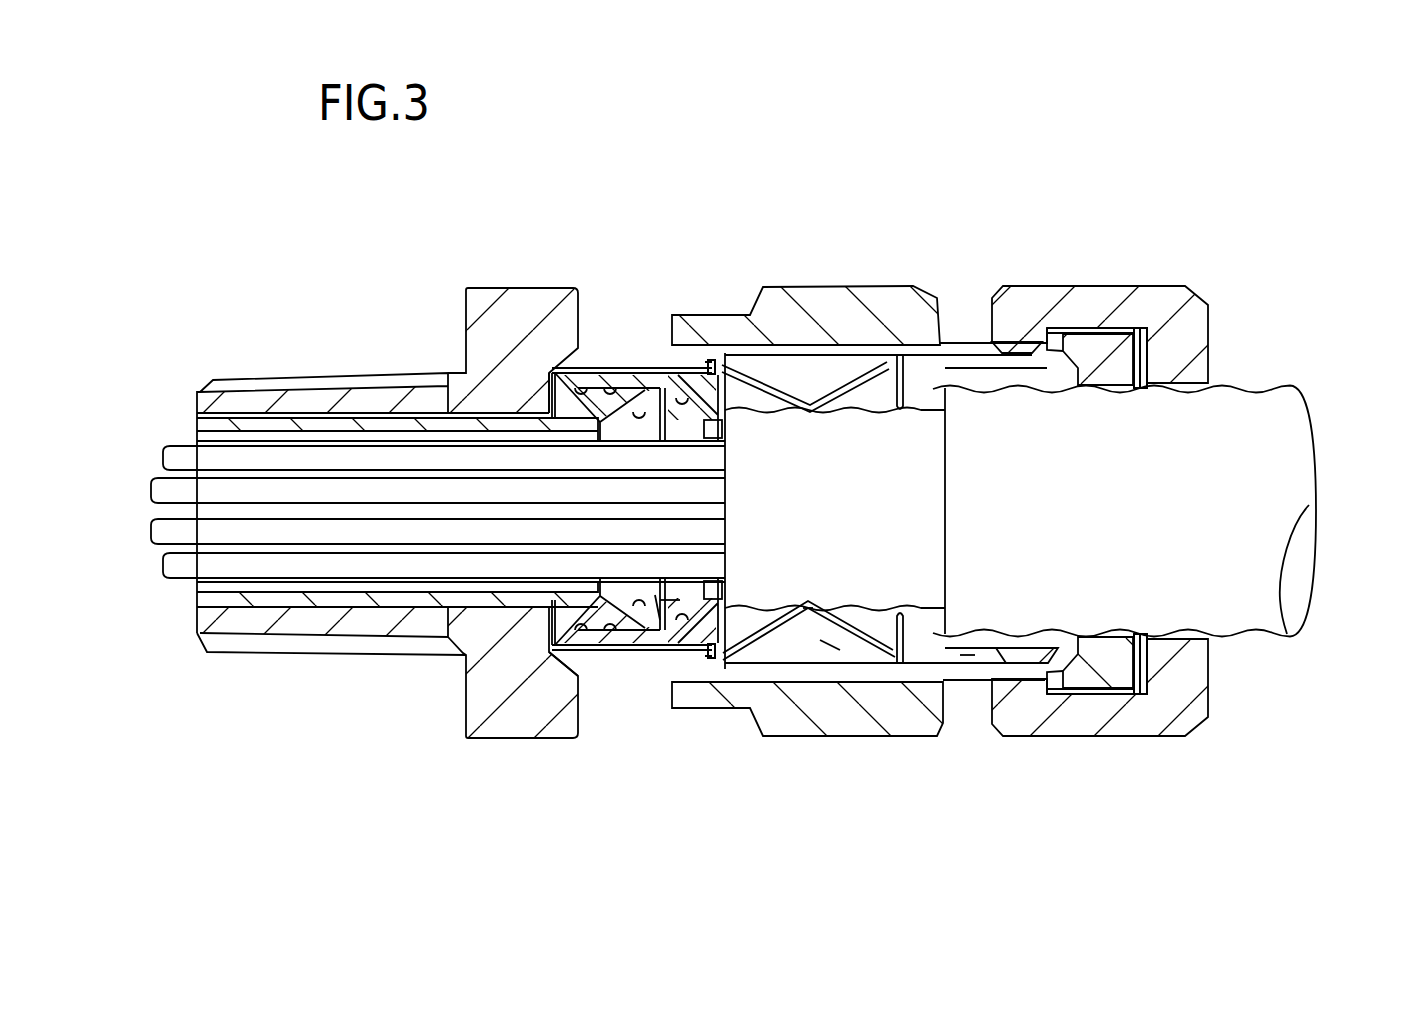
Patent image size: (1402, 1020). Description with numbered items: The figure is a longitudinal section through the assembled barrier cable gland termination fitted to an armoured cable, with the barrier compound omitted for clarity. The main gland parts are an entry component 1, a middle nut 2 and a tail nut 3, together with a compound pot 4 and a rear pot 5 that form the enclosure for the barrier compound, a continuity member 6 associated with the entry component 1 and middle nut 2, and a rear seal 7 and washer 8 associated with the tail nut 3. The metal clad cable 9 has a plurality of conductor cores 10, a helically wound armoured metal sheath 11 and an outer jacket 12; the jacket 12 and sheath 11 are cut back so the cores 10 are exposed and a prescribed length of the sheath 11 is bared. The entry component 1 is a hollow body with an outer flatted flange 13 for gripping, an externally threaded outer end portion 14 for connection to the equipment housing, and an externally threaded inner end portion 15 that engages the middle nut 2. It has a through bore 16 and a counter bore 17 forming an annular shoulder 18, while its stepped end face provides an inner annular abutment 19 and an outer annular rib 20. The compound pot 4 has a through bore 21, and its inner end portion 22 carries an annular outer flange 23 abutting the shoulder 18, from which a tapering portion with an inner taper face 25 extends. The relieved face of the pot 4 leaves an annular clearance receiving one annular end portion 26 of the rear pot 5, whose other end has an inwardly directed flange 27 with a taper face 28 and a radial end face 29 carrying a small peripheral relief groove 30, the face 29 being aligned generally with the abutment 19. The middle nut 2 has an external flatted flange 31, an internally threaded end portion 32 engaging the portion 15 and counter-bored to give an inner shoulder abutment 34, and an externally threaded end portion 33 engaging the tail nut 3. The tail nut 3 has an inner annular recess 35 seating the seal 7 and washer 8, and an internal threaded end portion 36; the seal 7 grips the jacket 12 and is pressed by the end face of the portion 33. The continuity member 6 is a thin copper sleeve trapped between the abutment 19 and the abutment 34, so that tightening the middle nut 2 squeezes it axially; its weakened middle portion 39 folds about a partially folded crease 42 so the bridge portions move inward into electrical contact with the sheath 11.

The entry component 1 is at (487, 280).
The middle nut 2 is at (913, 286).
The tail nut 3 is at (1166, 282).
The compound pot 4 is at (198, 635).
The rear pot 5 is at (638, 660).
The continuity member 6 is at (685, 663).
The rear seal 7 is at (1108, 340).
The washer 8 is at (1212, 345).
The metal clad cable 9 is at (1302, 386).
The conductor cores 10 is at (170, 580).
The armoured metal sheath 11 is at (927, 423).
The outer jacket 12 is at (1258, 400).
The outer flatted flange 13 is at (537, 290).
The outer end portion 14 is at (250, 395).
The inner end portion 15 is at (622, 403).
The through bore 16 is at (207, 432).
The counter bore 17 is at (573, 655).
The annular shoulder 18 is at (508, 738).
The inner annular abutment 19 is at (688, 640).
The outer annular rib 20 is at (755, 670).
The through bore 21 is at (200, 440).
The inner end portion 22 is at (600, 375).
The annular outer flange 23 is at (557, 393).
The inner taper face 25 is at (655, 410).
The annular end portion 26 is at (675, 405).
The inwardly directed flange 27 is at (790, 352).
The taper face 28 is at (725, 372).
The radial end face 29 is at (727, 397).
The peripheral relief groove 30 is at (760, 350).
The external flatted flange 31 is at (917, 737).
The end portion 32 is at (740, 700).
The end portion 33 is at (965, 660).
The inner shoulder abutment 34 is at (902, 672).
The inner annular recess 35 is at (1057, 353).
The internal threaded end portion 36 is at (997, 338).
The middle portion 39 is at (802, 632).
The partially folded crease 42 is at (830, 685).